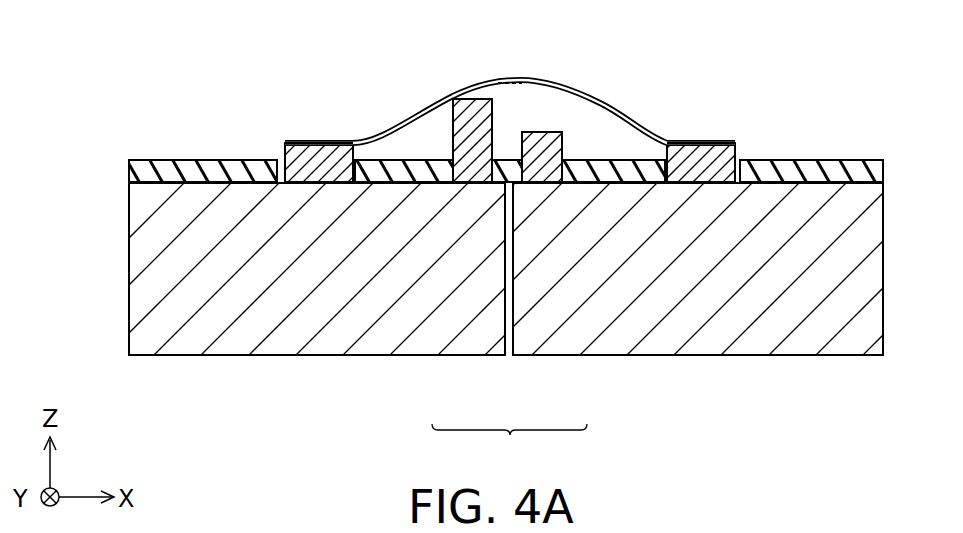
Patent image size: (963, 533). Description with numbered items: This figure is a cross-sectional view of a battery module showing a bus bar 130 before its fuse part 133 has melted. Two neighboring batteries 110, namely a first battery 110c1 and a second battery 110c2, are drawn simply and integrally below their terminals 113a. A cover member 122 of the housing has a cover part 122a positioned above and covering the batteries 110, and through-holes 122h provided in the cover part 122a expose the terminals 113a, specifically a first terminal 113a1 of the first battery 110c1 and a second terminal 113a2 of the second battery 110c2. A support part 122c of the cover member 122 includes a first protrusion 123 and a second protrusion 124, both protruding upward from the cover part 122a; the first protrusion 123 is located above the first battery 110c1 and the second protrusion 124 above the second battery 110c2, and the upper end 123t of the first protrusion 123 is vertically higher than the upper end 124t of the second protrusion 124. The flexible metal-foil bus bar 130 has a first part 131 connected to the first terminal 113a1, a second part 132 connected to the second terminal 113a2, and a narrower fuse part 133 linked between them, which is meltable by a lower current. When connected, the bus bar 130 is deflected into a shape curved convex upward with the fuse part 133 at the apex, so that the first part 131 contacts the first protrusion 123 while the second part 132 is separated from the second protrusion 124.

The battery 110 is at (485, 314).
The first battery 110c1 is at (167, 360).
The second battery 110c2 is at (845, 360).
The cover member 122 is at (122, 170).
The cover part 122a is at (157, 170).
The through-hole 122h is at (281, 166).
The support part 122c is at (509, 445).
The first protrusion 123 is at (475, 130).
The upper end of the first protrusion 123t is at (478, 96).
The second protrusion 124 is at (543, 148).
The upper end of the second protrusion 124t is at (557, 132).
The bus bar 130 is at (712, 138).
The first part 131 is at (332, 150).
The second part 132 is at (694, 142).
The fuse part 133 is at (506, 78).
The terminal 113a is at (580, 96).
The first terminal 113a1 is at (310, 155).
The second terminal 113a2 is at (733, 152).